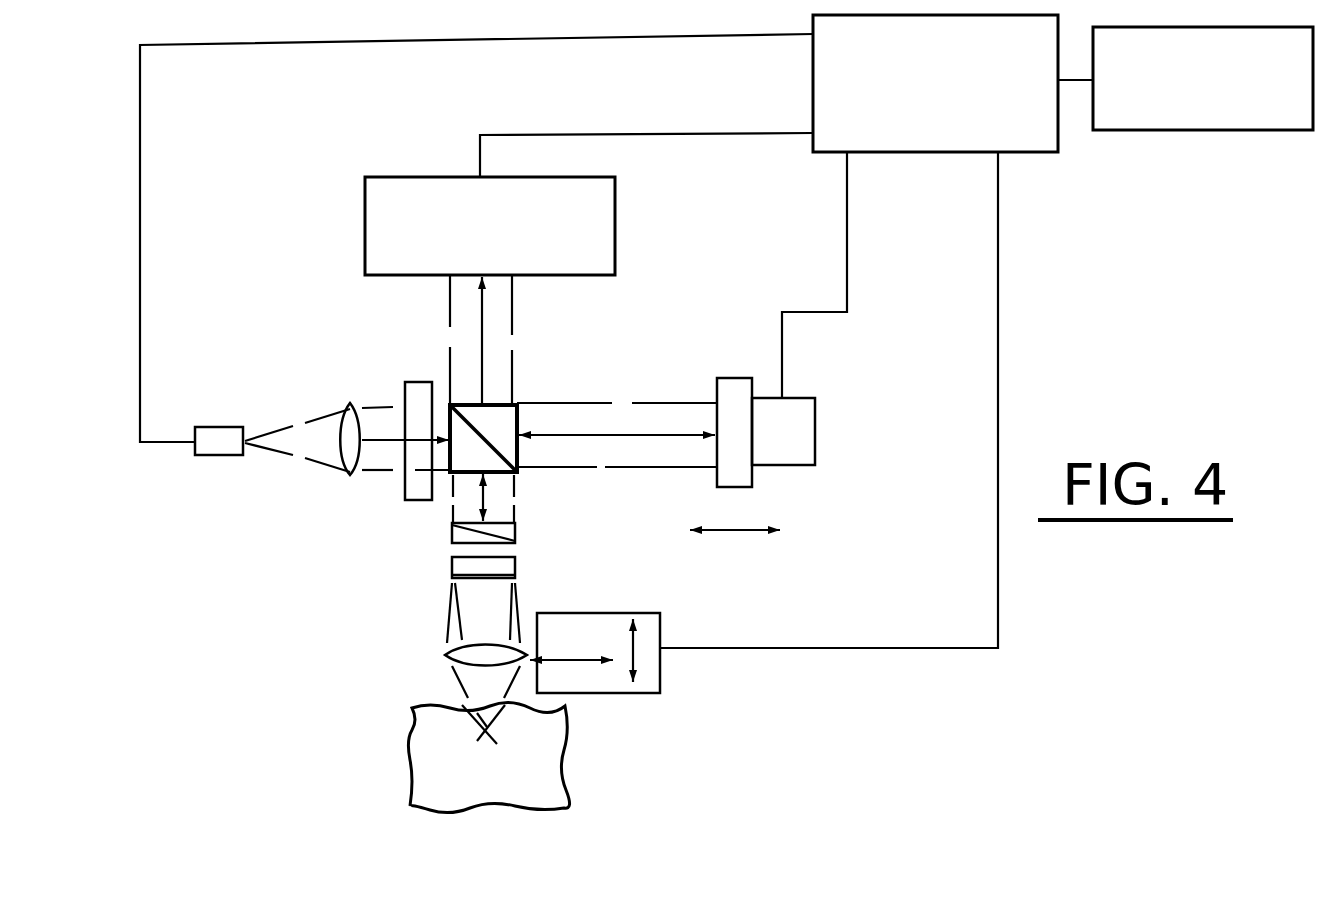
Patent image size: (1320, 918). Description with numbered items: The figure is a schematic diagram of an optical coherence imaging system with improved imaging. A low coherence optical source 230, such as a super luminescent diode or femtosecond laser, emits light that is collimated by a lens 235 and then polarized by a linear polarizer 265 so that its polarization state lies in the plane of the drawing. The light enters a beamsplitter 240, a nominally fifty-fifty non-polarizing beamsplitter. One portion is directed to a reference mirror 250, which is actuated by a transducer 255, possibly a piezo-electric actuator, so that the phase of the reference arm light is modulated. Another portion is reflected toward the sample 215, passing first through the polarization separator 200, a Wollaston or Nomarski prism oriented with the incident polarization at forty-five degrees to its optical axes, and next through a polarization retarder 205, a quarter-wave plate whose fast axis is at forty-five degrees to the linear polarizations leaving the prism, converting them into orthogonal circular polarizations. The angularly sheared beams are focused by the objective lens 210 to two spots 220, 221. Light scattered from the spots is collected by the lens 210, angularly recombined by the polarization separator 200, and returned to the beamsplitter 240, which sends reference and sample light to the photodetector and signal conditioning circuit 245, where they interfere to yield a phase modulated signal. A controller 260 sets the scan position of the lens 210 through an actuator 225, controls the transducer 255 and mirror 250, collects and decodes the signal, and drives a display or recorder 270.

The polarization separator 200 is at (452, 532).
The polarization retarder 205 is at (516, 571).
The lens 210 is at (447, 654).
The sample 215 is at (410, 757).
The spot 220 is at (497, 744).
The spot 221 is at (477, 741).
The actuator 225 is at (660, 690).
The low coherence optical source 230 is at (213, 427).
The lens 235 is at (348, 403).
The beamsplitter 240 is at (498, 404).
The photodetector and signal conditioning circuit 245 is at (615, 218).
The reference mirror 250 is at (730, 377).
The transducer 255 is at (815, 430).
The controller 260 is at (928, 152).
The linear polarizer 265 is at (420, 381).
The display or recorder 270 is at (1178, 130).